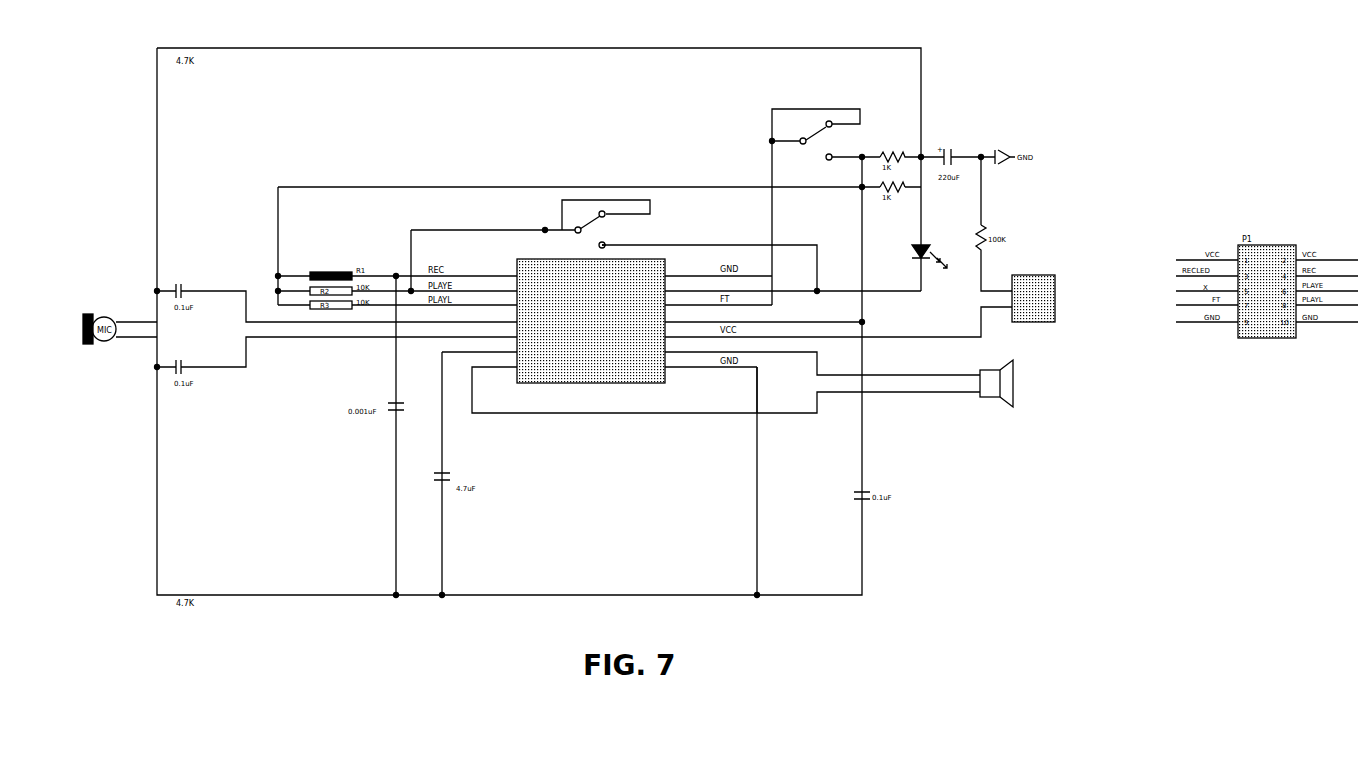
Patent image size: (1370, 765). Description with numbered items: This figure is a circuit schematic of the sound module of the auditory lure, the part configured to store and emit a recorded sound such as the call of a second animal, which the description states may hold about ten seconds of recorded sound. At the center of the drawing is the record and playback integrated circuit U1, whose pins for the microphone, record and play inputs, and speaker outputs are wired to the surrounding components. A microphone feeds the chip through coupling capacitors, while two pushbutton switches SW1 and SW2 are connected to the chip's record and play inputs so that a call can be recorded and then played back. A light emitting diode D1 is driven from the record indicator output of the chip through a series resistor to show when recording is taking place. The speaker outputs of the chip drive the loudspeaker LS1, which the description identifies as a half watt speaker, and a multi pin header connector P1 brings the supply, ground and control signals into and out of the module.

The ISD1820 voice record/playback chip U1 is at (591, 327).
The record switch SW1 is at (816, 138).
The play switch SW2 is at (597, 226).
The record LED D1 is at (932, 256).
The connector P1 is at (1033, 293).
The loudspeaker LS1 is at (996, 383).